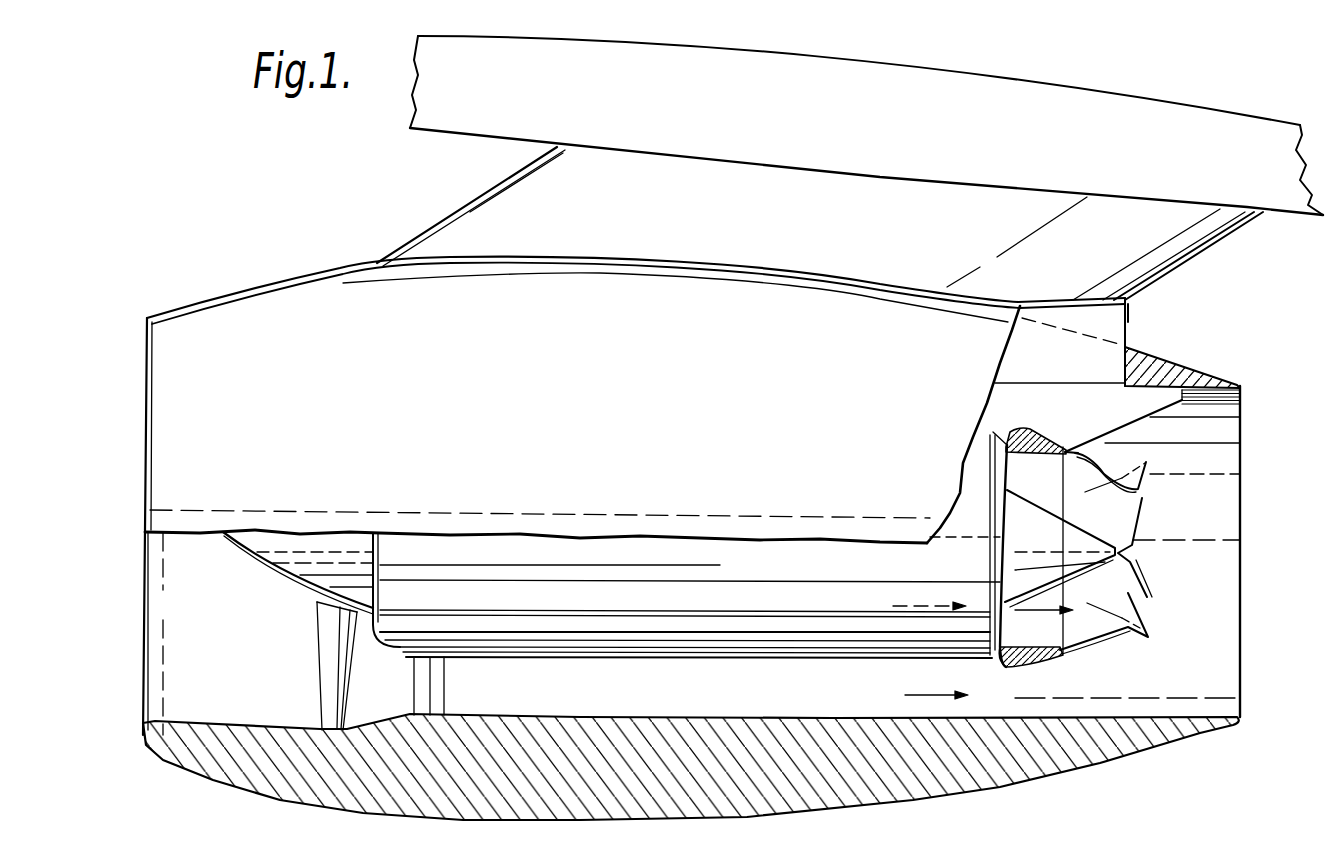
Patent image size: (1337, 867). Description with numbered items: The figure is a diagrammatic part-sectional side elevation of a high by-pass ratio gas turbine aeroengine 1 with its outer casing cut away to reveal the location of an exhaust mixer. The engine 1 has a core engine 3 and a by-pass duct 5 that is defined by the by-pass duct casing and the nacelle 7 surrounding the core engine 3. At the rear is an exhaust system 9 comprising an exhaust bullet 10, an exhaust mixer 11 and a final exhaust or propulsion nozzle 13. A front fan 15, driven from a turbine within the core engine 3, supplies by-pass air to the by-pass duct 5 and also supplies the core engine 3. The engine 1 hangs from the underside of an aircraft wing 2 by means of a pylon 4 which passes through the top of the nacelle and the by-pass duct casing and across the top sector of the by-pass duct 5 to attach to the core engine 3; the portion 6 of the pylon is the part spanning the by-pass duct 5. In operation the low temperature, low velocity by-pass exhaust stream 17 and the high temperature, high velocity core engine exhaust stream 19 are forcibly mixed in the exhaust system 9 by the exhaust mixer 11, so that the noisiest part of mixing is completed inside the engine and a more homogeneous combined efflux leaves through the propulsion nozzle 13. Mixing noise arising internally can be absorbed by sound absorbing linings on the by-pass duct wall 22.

The gas turbine aeroengine 1 is at (380, 203).
The wing 2 is at (850, 130).
The core engine 3 is at (674, 576).
The pylon 4 is at (470, 217).
The by-pass duct 5 is at (672, 701).
The portion of the pylon 6 is at (1090, 426).
The nacelle 7 is at (738, 760).
The exhaust system 9 is at (1170, 358).
The exhaust bullet 10 is at (1030, 540).
The exhaust mixer 11 is at (1163, 457).
The final exhaust nozzle 13 is at (1240, 492).
The front fan 15 is at (323, 662).
The by-pass exhaust stream 17 is at (917, 690).
The core engine exhaust stream 19 is at (932, 600).
The by-pass duct wall 22 is at (870, 720).